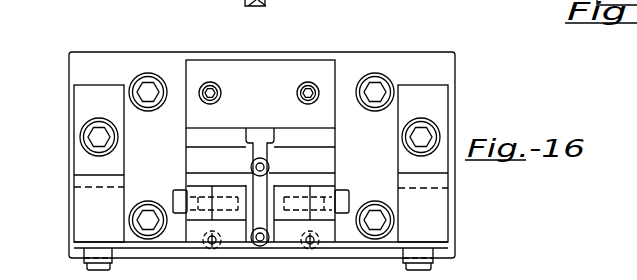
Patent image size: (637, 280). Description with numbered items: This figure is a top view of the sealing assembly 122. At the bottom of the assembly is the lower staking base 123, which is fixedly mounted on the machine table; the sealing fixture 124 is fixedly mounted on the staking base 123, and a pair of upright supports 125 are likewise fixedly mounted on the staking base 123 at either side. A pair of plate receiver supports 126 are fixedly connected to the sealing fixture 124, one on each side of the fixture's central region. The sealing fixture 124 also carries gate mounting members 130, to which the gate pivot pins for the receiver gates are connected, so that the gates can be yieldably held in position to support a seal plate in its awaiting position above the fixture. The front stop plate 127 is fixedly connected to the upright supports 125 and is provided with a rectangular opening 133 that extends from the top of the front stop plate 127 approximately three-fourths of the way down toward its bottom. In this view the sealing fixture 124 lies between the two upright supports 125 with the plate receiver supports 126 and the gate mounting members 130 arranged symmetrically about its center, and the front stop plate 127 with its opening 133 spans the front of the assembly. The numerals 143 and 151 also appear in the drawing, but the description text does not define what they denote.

The sealing assembly 122 is at (82, 46).
The lower staking base 123 is at (124, 63).
The sealing fixture 124 is at (212, 75).
The upright supports 125 is at (87, 102).
The plate receiver supports 126 is at (193, 192).
The front stop plate 127 is at (228, 253).
The gate mounting members 130 is at (198, 230).
The rectangular opening 133 is at (262, 252).
The support member 143 is at (264, 6).
The bracket 151 is at (256, 6).